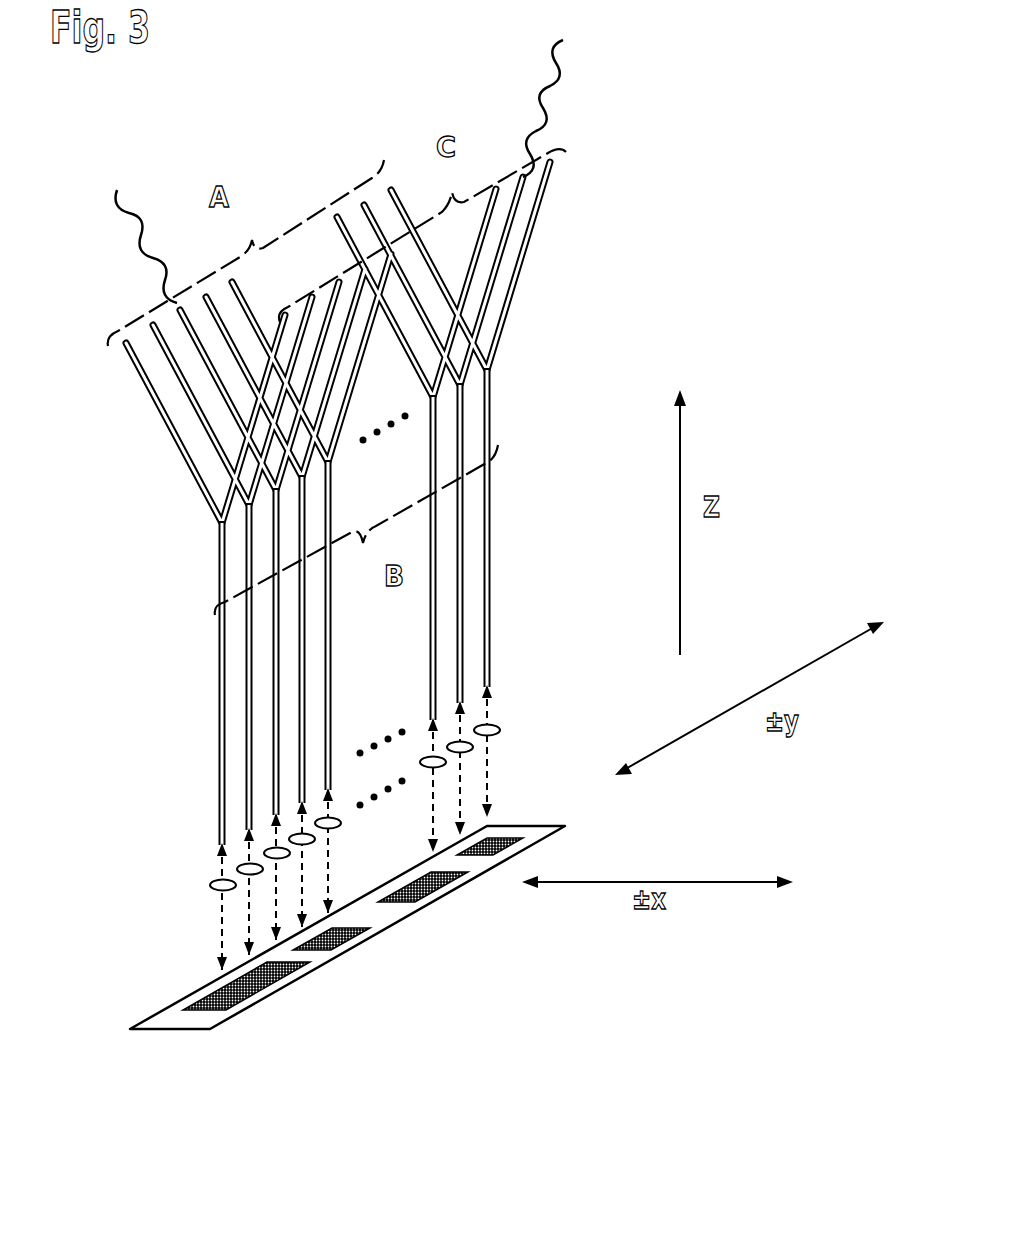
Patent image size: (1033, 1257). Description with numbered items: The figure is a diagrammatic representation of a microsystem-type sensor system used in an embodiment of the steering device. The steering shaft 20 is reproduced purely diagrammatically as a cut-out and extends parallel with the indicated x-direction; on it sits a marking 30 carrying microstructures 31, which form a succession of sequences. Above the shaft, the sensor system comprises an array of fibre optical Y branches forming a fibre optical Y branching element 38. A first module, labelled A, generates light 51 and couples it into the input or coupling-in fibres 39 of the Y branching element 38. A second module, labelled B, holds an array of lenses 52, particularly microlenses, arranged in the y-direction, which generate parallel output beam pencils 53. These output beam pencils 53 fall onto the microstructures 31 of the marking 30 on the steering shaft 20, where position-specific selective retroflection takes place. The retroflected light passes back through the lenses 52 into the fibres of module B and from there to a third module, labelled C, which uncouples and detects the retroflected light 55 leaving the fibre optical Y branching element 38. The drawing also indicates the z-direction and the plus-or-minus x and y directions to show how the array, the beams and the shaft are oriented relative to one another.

The steering shaft 20 is at (342, 961).
The marking 30 is at (360, 970).
The microstructures 31 is at (263, 998).
The fibre optical Y branching element 38 is at (216, 566).
The coupling-in fibres 39 is at (165, 421).
The light 51 is at (143, 233).
The lenses 52 is at (210, 885).
The output beam pencils 53 is at (212, 925).
The retroflected light 55 is at (560, 102).